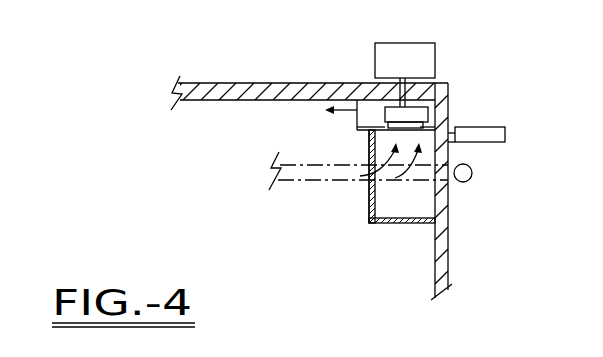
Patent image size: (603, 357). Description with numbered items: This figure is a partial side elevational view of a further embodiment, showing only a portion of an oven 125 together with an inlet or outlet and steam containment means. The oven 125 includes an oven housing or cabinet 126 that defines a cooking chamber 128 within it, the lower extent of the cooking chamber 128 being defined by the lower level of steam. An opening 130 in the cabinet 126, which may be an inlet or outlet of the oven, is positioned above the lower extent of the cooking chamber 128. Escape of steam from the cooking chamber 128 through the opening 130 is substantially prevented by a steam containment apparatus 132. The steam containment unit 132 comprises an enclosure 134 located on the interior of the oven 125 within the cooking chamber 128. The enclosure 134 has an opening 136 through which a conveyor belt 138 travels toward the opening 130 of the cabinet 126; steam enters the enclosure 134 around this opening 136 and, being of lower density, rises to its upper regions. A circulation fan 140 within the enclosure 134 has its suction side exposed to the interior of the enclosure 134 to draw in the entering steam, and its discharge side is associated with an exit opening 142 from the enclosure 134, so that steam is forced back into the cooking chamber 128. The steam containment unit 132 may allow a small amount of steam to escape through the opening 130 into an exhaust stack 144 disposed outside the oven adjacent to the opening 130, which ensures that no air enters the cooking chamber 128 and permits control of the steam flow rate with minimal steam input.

The oven 125 is at (252, 76).
The oven housing or cabinet 126 is at (335, 83).
The cooking chamber 128 is at (222, 206).
The opening 130 is at (455, 153).
The steam containment apparatus 132 is at (353, 216).
The enclosure 134 is at (393, 225).
The opening 136 is at (366, 187).
The conveyor belt 138 is at (450, 183).
The circulation fan 140 is at (426, 110).
The exit opening 142 is at (356, 115).
The exhaust stack 144 is at (505, 137).